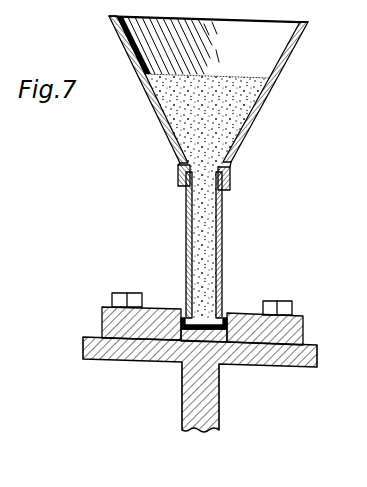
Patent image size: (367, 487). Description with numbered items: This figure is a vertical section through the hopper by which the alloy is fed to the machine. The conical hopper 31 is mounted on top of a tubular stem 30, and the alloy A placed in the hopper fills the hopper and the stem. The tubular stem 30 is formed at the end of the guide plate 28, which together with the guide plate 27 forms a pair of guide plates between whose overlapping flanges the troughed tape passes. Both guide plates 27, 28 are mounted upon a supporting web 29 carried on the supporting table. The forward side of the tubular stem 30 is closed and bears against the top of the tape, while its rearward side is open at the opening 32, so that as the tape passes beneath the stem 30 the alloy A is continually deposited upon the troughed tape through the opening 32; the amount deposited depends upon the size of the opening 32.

The conical hopper 31 is at (270, 90).
The alloy A is at (223, 113).
The tubular stem 30 is at (222, 224).
The opening 32 is at (183, 317).
The guide plate 28 is at (147, 325).
The guide plate 27 is at (243, 327).
The supporting web 29 is at (198, 396).